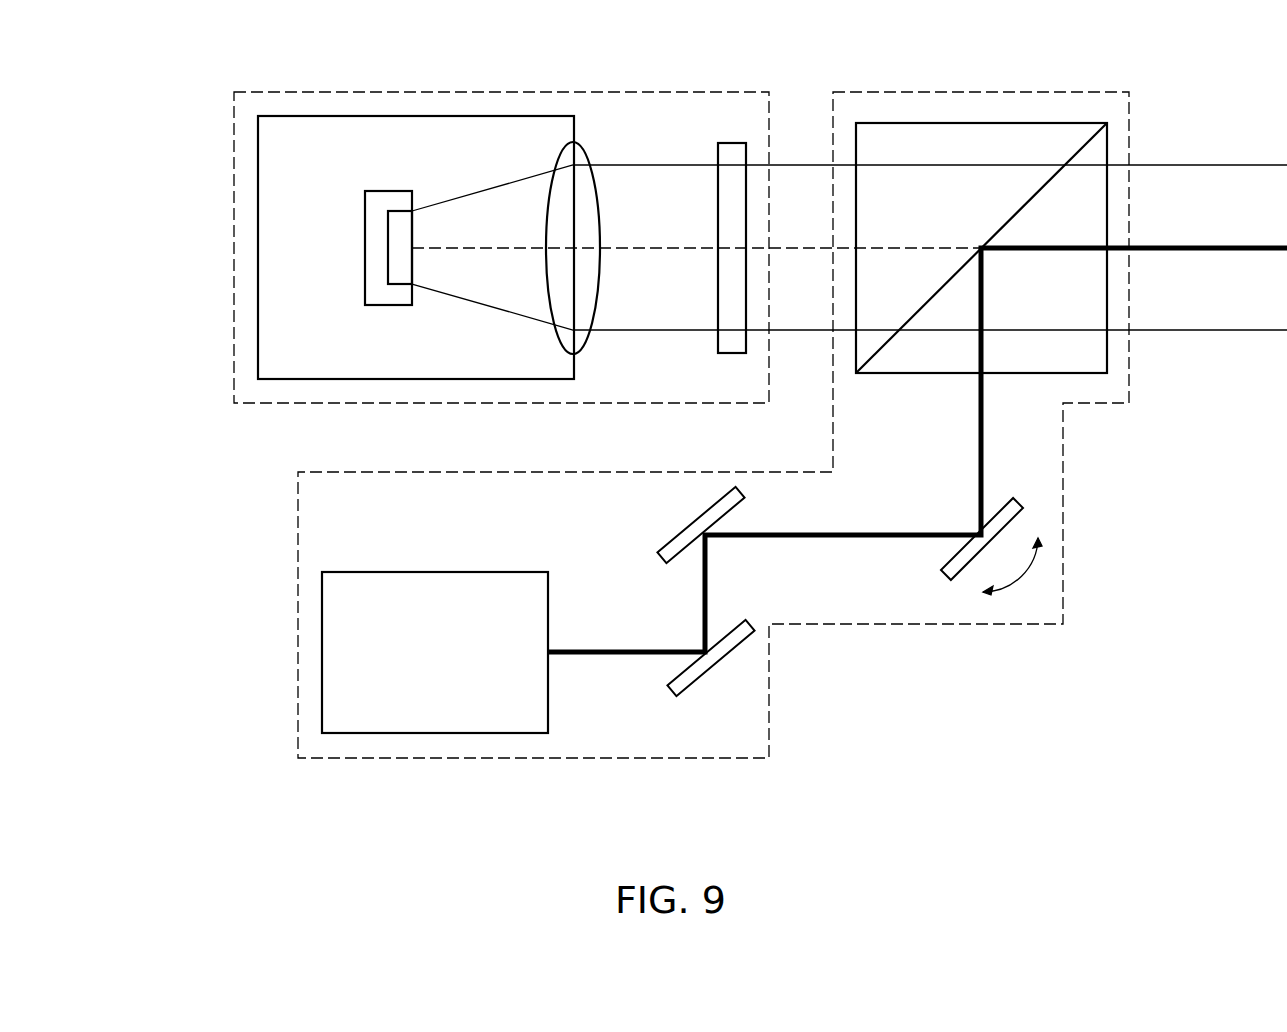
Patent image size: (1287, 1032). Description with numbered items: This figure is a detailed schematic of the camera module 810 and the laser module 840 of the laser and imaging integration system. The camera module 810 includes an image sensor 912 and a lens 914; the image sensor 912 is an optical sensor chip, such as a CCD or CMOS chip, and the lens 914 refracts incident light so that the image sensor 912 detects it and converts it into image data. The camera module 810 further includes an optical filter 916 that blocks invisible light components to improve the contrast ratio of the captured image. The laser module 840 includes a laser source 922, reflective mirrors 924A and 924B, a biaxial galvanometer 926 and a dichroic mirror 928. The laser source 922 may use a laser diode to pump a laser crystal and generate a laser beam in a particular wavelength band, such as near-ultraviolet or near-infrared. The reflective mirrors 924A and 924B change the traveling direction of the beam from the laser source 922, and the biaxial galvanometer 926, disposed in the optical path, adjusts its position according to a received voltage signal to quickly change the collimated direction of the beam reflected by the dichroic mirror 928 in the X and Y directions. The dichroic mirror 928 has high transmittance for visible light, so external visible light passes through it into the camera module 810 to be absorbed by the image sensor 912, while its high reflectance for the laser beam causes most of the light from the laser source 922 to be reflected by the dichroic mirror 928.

The camera module 810 is at (234, 246).
The image sensor 912 is at (395, 306).
The lens 914 is at (560, 354).
The optical filter 916 is at (735, 143).
The laser module 840 is at (1129, 365).
The dichroic mirror 928 is at (985, 123).
The laser source 922 is at (432, 733).
The reflective mirror 924A is at (718, 662).
The reflective mirror 924B is at (703, 495).
The biaxial galvanometer 926 is at (1018, 503).